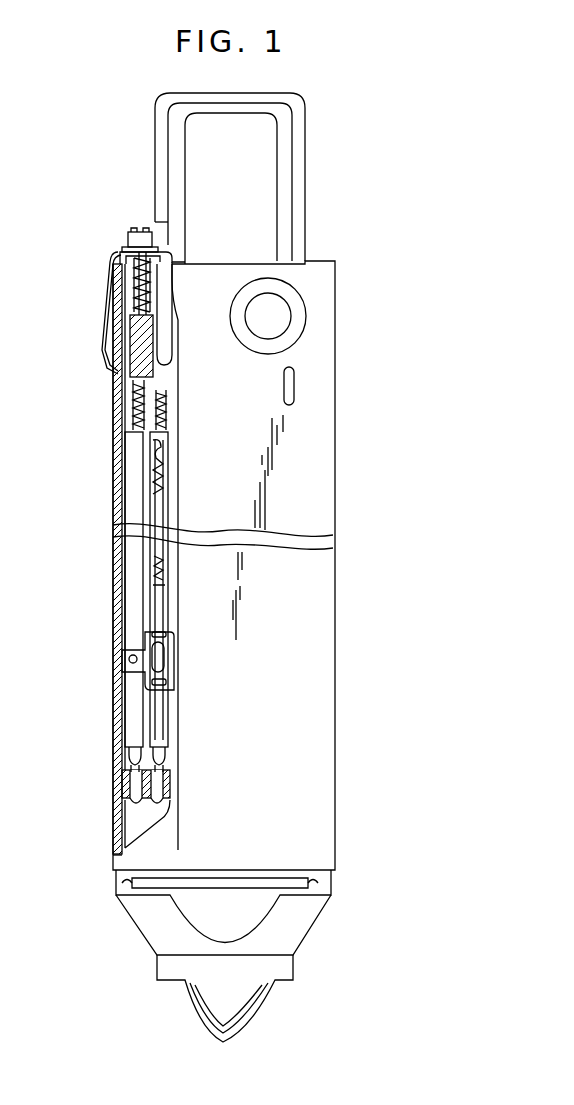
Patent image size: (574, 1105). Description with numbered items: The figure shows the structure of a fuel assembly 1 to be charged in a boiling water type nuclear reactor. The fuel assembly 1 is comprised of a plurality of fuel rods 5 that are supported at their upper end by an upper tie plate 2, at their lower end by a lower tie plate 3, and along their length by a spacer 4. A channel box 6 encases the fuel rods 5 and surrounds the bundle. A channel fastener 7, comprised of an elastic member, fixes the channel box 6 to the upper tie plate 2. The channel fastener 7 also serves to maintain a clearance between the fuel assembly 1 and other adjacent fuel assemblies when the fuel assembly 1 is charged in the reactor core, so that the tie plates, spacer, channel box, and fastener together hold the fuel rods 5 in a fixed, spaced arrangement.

The fuel assembly 1 is at (350, 269).
The upper tie plate 2 is at (135, 345).
The lower tie plate 3 is at (325, 921).
The spacer 4 is at (120, 643).
The fuel rods 5 is at (120, 480).
The channel box 6 is at (335, 478).
The channel fastener 7 is at (107, 315).